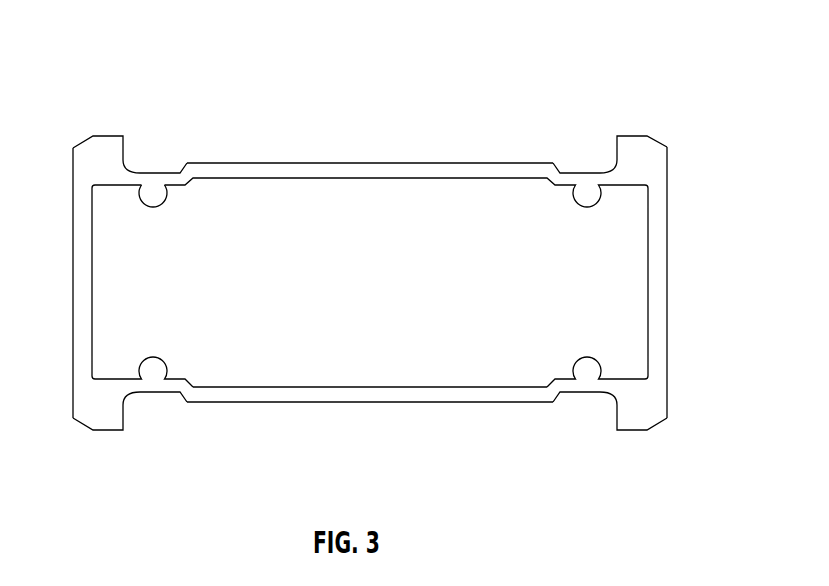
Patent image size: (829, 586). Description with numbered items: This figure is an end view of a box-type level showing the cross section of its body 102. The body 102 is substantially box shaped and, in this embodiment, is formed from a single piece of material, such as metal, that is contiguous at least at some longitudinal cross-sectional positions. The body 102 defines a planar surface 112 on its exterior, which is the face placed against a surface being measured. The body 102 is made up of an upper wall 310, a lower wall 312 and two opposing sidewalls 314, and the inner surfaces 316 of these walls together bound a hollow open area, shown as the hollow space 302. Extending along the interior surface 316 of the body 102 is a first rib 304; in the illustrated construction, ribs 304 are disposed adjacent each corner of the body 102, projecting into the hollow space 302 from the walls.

The body 102 is at (410, 256).
The planar surface 112 is at (73, 280).
The hollow space 302 is at (405, 306).
The first rib 304 is at (160, 205).
The upper wall 310 is at (667, 330).
The lower wall 312 is at (86, 327).
The sidewalls 314 is at (343, 163).
The inner surfaces 316 is at (497, 382).